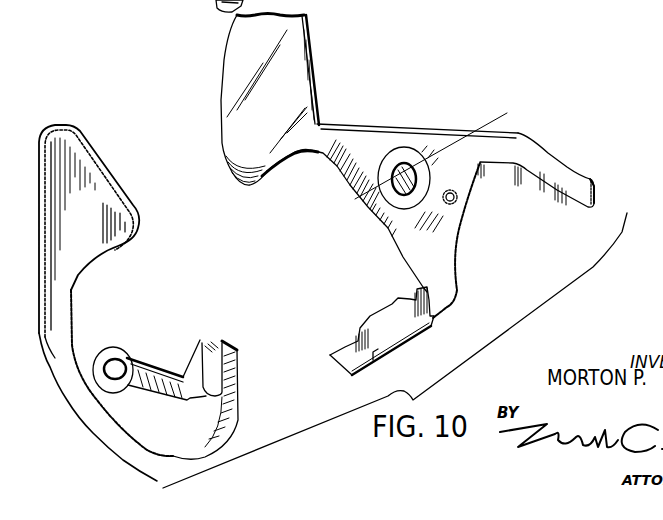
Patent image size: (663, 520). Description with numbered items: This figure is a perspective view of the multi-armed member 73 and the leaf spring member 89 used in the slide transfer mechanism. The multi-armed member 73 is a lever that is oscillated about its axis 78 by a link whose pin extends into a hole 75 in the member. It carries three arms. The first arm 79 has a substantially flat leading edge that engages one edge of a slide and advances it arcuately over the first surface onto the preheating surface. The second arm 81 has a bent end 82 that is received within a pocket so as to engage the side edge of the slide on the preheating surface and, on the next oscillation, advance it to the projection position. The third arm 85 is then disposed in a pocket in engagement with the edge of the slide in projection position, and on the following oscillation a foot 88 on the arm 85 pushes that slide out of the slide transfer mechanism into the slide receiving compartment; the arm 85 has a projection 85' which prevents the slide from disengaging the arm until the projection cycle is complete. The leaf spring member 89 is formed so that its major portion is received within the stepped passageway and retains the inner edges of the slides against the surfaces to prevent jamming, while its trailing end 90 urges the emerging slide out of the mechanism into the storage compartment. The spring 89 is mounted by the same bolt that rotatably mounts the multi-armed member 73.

The multi-armed member 73 is at (410, 120).
The hole 75 is at (458, 198).
The axis 78 is at (343, 199).
The first arm 79 is at (316, 48).
The second arm 81 is at (548, 152).
The bent end 82 is at (594, 187).
The third arm 85 is at (385, 345).
The projection 85' is at (382, 320).
The foot 88 is at (345, 348).
The leaf spring member 89 is at (155, 360).
The trailing end 90 is at (123, 215).